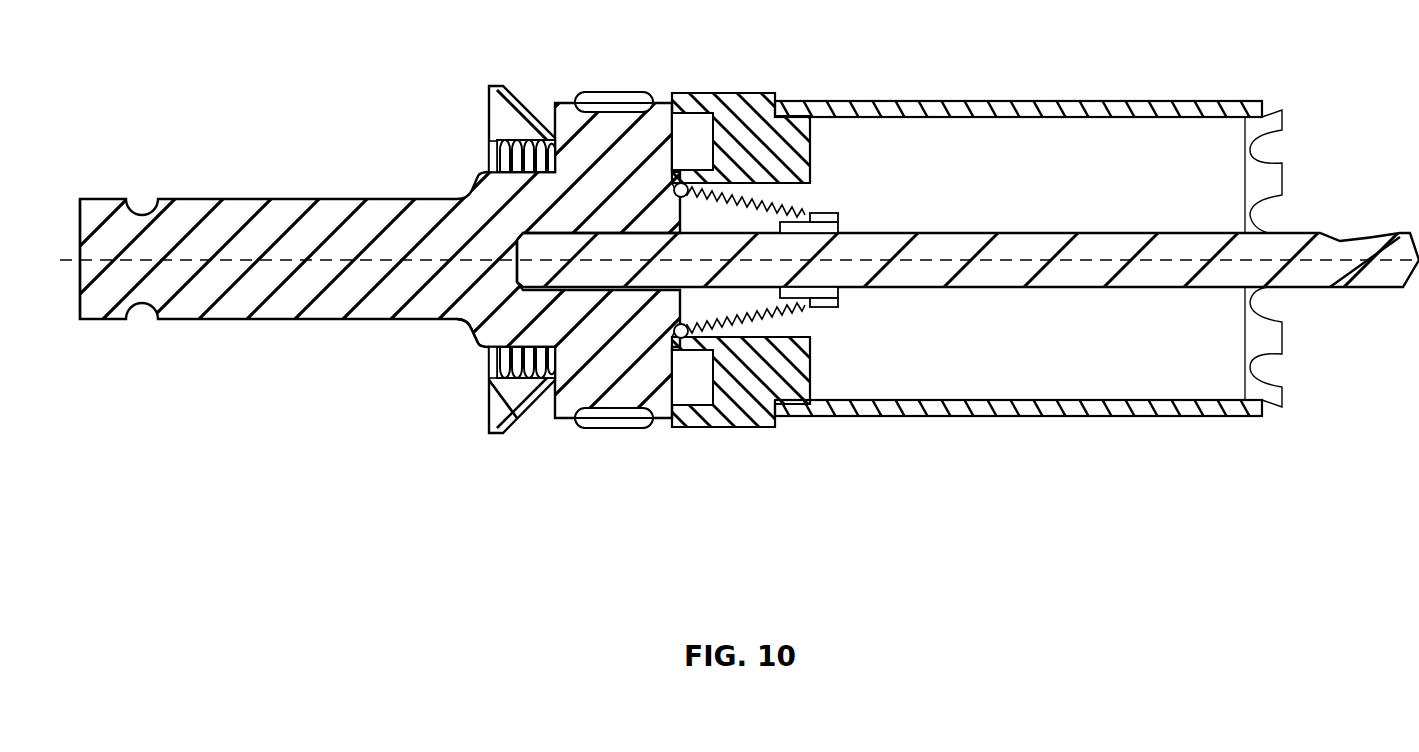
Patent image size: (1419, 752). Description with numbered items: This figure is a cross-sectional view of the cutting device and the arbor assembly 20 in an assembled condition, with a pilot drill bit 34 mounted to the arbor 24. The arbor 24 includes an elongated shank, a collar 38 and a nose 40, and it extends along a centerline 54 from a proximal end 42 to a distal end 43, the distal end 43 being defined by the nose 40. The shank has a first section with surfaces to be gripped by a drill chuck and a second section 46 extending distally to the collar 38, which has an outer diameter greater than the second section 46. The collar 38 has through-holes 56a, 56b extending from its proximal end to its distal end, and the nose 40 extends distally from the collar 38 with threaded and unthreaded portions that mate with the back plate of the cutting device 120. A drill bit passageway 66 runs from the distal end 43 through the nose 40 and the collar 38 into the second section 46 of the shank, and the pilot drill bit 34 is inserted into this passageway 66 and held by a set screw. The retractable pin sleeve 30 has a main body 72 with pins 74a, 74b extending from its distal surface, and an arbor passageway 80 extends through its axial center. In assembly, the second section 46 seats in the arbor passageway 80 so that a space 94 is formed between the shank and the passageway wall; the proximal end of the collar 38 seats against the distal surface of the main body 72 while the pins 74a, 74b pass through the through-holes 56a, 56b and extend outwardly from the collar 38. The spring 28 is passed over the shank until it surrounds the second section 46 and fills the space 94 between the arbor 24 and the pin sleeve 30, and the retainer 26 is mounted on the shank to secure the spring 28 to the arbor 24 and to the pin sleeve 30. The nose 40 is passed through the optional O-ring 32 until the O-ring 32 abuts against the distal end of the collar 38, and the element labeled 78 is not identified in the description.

The arbor assembly 20 is at (173, 356).
The arbor 24 is at (329, 196).
The retainer 26 is at (487, 356).
The spring 28 is at (578, 130).
The retractable pin sleeve 30 is at (548, 400).
The O-ring 32 is at (684, 168).
The pilot drill bit 34 is at (984, 294).
The collar 38 is at (580, 393).
The nose 40 is at (765, 181).
The proximal end 42 is at (76, 296).
The distal end 43 is at (836, 308).
The second section 46 is at (495, 318).
The centerline 54 is at (270, 244).
The through-hole 56a is at (655, 96).
The through-hole 56b is at (604, 422).
The drill bit passageway 66 is at (520, 252).
The main body 72 is at (530, 136).
The pin 74a is at (600, 98).
The pin 74b is at (652, 425).
The upper nut 78 is at (486, 84).
The arbor passageway 80 is at (487, 378).
The space 94 is at (505, 418).
The hole saw cup 120 is at (1012, 100).